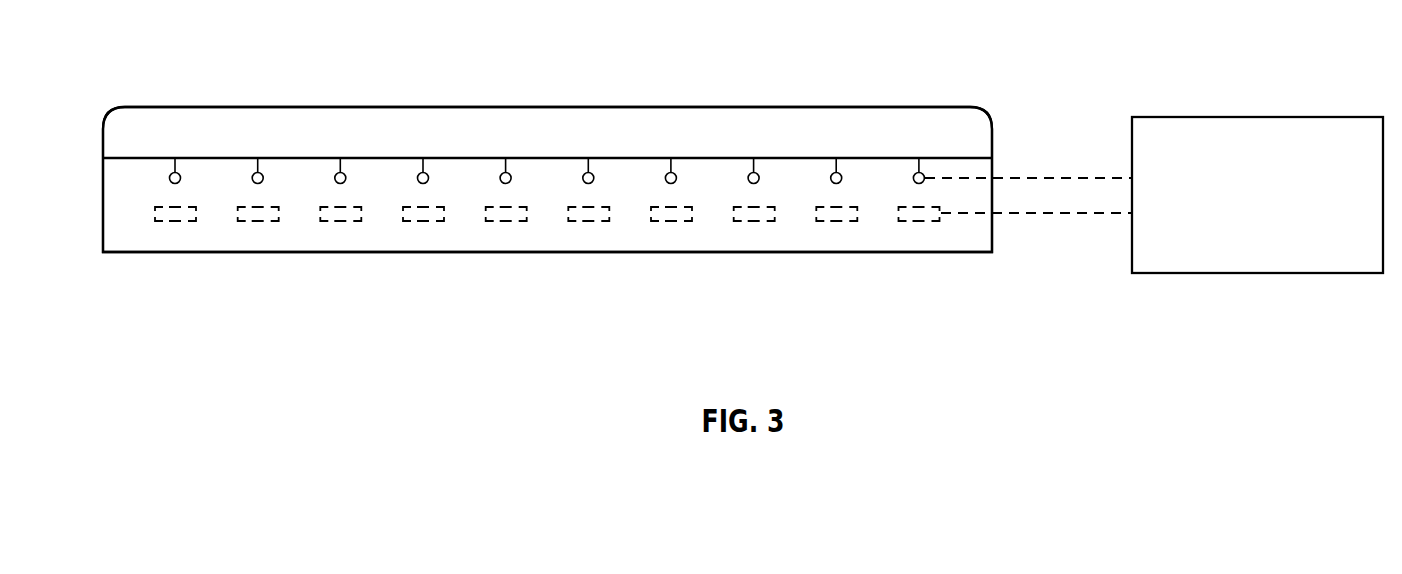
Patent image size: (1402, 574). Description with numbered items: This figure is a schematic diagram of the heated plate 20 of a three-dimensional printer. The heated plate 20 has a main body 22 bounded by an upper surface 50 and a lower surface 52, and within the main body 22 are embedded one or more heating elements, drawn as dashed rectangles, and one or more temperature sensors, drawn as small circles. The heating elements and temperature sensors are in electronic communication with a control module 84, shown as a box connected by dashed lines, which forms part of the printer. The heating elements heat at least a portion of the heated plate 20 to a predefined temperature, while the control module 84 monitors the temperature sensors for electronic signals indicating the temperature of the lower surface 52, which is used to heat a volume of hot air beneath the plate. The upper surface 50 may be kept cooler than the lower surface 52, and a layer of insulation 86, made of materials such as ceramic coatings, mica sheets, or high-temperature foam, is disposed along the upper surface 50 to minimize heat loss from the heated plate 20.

The heated plate 20 is at (83, 302).
The main body 22 is at (894, 247).
The upper surface 50 is at (131, 158).
The lower surface 52 is at (178, 253).
The control module 84 is at (1328, 117).
The layer of insulation 86 is at (945, 107).